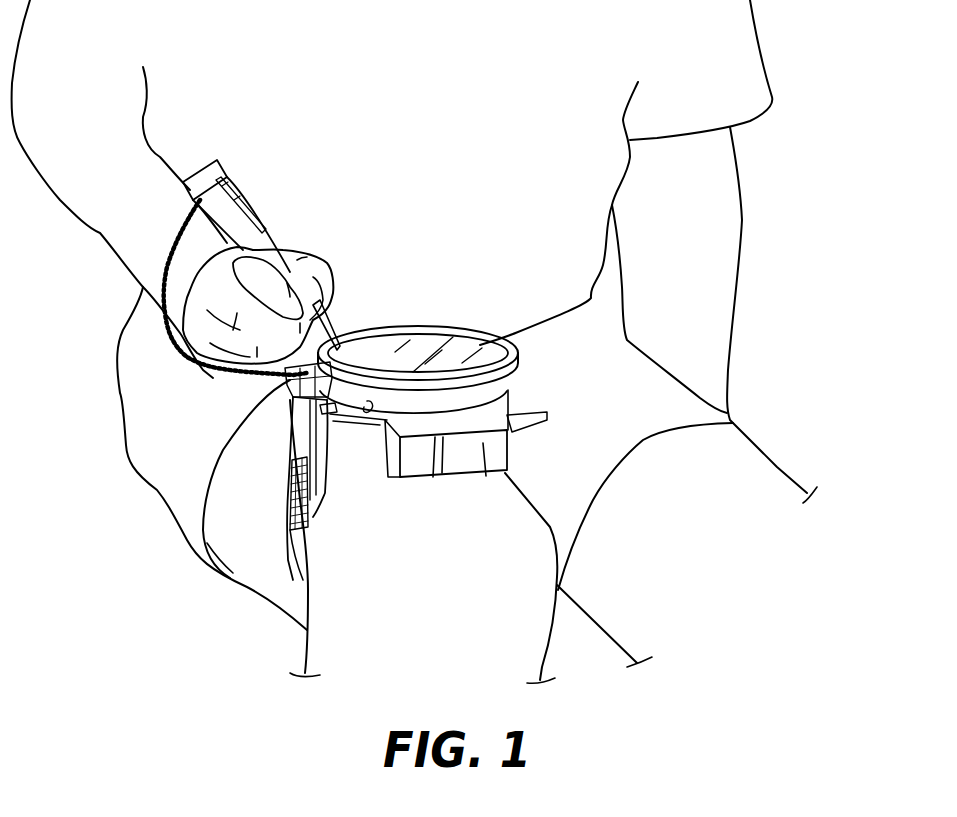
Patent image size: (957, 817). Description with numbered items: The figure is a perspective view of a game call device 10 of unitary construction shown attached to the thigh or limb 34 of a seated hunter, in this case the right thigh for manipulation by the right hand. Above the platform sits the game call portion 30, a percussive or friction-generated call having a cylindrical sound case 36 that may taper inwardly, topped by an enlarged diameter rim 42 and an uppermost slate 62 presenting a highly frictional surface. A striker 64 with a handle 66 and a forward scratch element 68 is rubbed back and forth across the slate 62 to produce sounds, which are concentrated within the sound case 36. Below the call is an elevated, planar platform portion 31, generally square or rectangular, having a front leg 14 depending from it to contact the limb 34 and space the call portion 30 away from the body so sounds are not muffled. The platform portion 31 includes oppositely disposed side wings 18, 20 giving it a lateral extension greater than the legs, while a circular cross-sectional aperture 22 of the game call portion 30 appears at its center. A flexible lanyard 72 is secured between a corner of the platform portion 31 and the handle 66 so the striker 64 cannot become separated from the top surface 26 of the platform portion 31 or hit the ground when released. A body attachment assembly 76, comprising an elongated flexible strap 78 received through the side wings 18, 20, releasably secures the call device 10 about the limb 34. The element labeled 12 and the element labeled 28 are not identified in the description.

The call device 10 is at (580, 462).
The housing base 12 is at (515, 402).
The front leg 14 is at (445, 420).
The side wing 18 is at (326, 410).
The side wing 20 is at (513, 385).
The circular cross-sectional aperture 22 is at (360, 407).
The top surface 26 is at (486, 478).
The belt clip 28 is at (315, 483).
The game call portion 30 is at (476, 329).
The platform portion 31 is at (400, 488).
The user's limb 34 is at (418, 503).
The sound case 36 is at (513, 365).
The enlarged diameter rim 42 is at (287, 390).
The slate 62 is at (500, 347).
The striker 64 is at (265, 222).
The handle 66 is at (233, 191).
The scratch element 68 is at (320, 322).
The lanyard 72 is at (178, 232).
The body attachment assembly 76 is at (291, 484).
The strap 78 is at (282, 506).